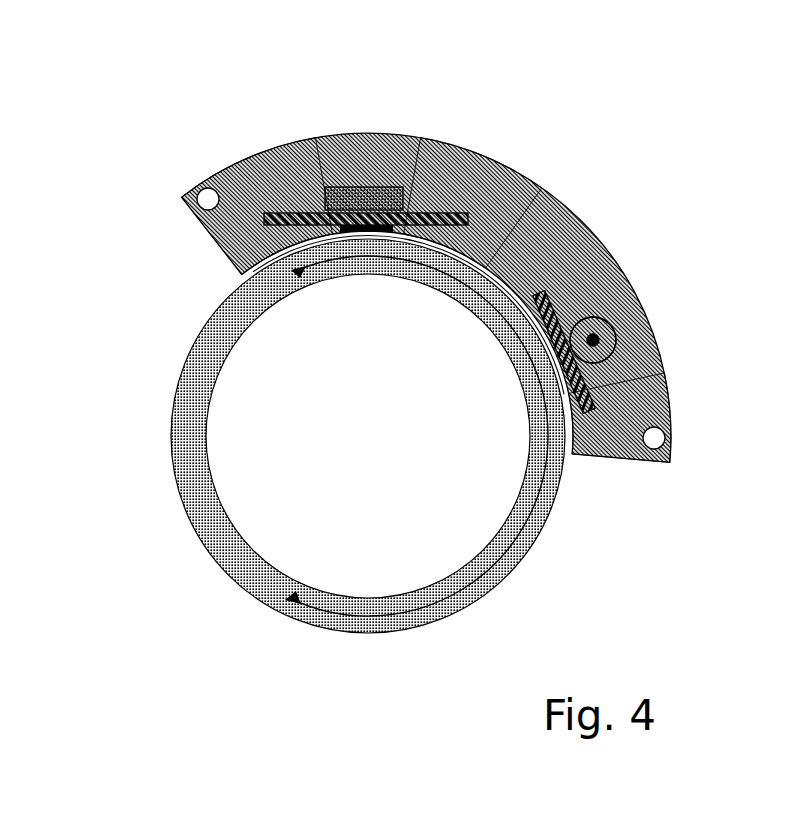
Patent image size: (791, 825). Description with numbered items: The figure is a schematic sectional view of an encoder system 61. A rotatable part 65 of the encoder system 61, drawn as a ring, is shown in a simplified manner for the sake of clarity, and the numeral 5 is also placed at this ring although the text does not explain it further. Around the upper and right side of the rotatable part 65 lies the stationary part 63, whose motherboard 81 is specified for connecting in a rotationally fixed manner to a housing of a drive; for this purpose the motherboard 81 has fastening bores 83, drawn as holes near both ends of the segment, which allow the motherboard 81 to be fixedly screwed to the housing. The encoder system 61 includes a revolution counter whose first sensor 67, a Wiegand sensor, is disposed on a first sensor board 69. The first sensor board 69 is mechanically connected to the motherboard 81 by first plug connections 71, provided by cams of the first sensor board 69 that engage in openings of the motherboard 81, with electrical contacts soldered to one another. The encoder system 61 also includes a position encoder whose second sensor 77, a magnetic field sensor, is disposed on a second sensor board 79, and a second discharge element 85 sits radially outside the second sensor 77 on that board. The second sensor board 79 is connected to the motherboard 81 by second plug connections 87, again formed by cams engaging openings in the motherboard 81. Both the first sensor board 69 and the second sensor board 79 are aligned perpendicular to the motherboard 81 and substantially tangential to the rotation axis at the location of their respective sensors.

The encoder system 61 is at (118, 118).
The stationary part 63 is at (552, 161).
The rotatable part 65 is at (146, 388).
The rotating element 5 is at (520, 558).
The first sensor 67 is at (618, 342).
The first sensor board 69 is at (672, 415).
The first plug connections 71 is at (598, 288).
The second sensor 77 is at (253, 272).
The second sensor board 79 is at (304, 212).
The motherboard 81 is at (578, 212).
The fastening bores 83 is at (198, 226).
The second discharge element 85 is at (360, 187).
The second plug connections 87 is at (254, 152).